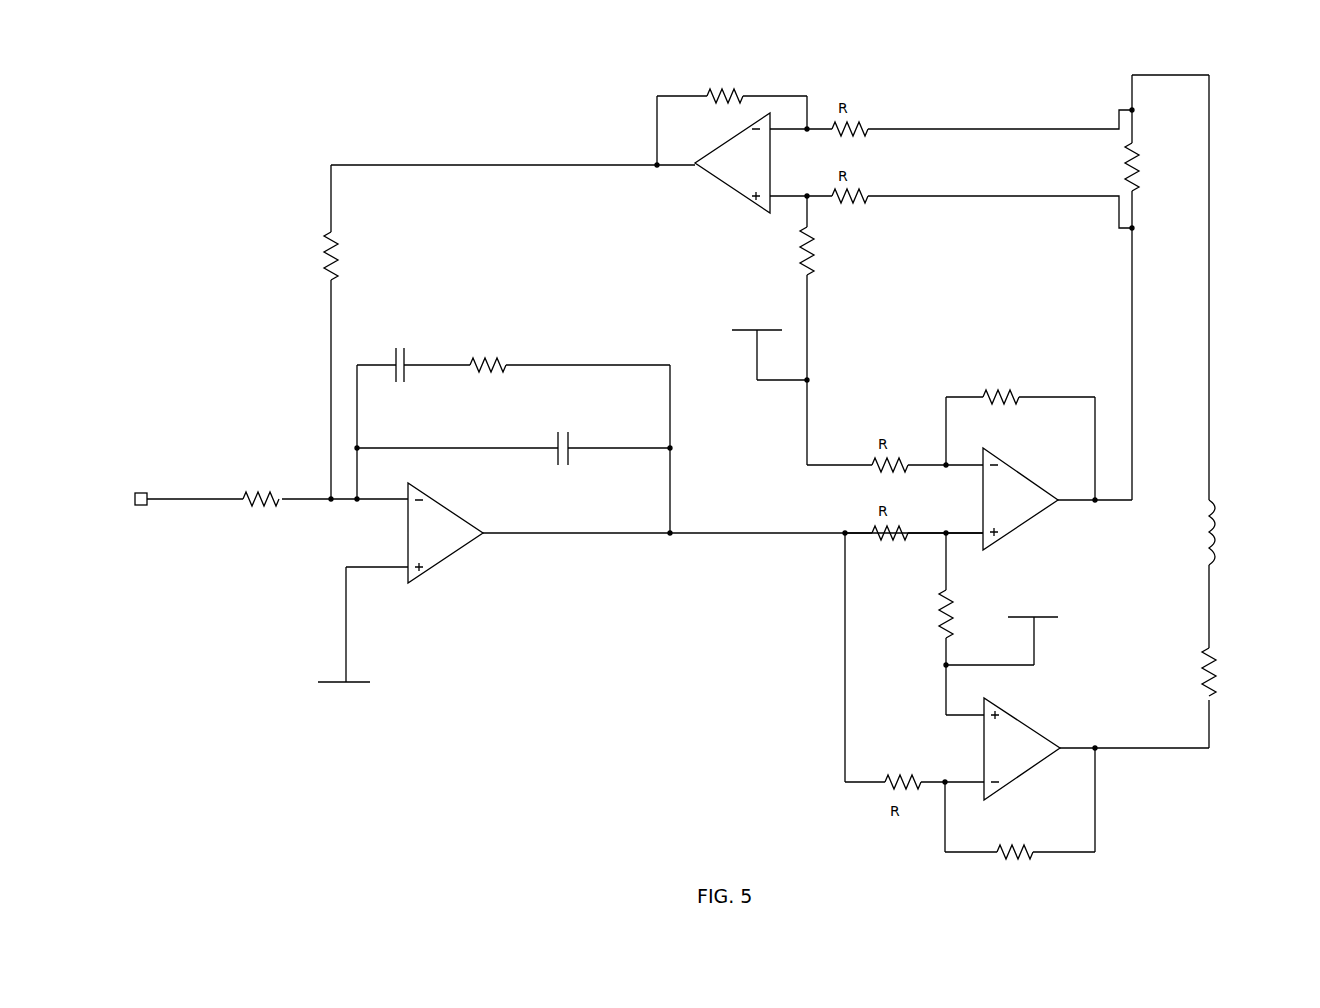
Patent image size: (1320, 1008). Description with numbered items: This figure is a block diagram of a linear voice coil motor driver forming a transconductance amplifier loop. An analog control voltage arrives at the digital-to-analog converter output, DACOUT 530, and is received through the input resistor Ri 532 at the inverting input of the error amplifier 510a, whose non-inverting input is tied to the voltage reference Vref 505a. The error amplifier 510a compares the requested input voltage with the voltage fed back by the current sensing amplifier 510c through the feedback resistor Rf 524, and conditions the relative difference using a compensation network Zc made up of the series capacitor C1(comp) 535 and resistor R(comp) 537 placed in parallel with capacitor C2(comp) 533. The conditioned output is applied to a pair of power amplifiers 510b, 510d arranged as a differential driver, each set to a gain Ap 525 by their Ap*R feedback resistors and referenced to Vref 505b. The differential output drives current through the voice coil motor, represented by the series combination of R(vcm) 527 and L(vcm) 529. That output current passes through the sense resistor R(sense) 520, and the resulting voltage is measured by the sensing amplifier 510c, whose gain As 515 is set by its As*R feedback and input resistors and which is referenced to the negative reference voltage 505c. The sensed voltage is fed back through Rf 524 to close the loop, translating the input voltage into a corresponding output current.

The digital-to-analog converter output (DACOUT) 530 is at (149, 460).
The resistor (Ri) 532 is at (280, 448).
The feedback resistor Rf 524 is at (410, 263).
The capacitor C1(comp) 535 is at (372, 395).
The resistor R(comp) 537 is at (512, 393).
The compensation capacitor C2(comp) 533 is at (613, 516).
The error amplifier 510a is at (528, 613).
The voltage reference Vref 505a is at (457, 665).
The current sensing amplifier 510c is at (798, 241).
The sense amplifier gain As 515 is at (724, 62).
The voltage reference Vref 505c is at (718, 292).
The sense resistor R(s) 520 is at (1268, 161).
The inductor L(vcm) 529 is at (1308, 543).
The resistor R(vcm) 527 is at (1308, 684).
The power amplifier 510d is at (1095, 443).
The power amplifier gain Ap 525 is at (1000, 366).
The voltage reference Vref 505b is at (1084, 583).
The power amplifier 510b is at (1066, 820).